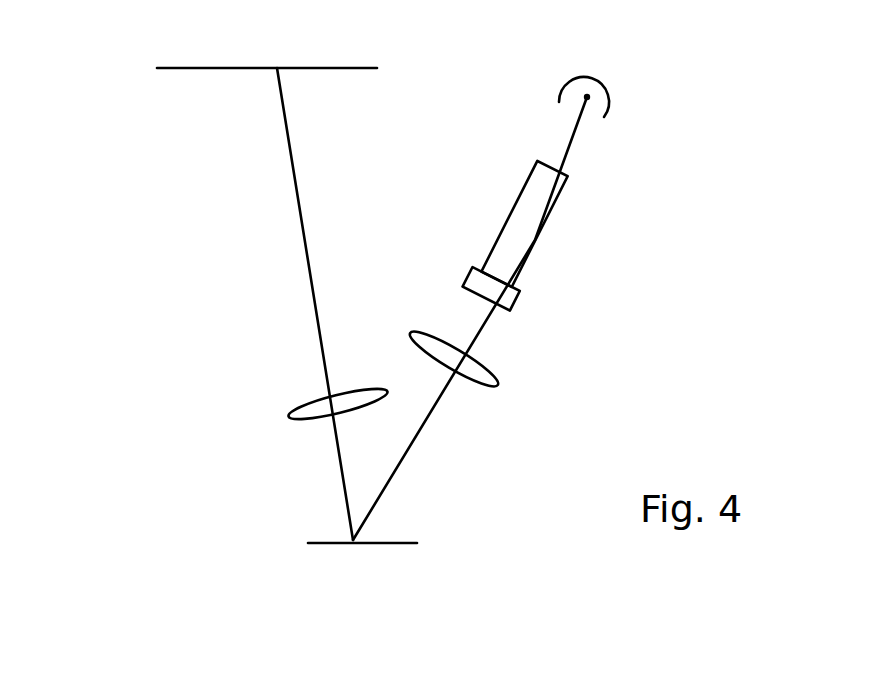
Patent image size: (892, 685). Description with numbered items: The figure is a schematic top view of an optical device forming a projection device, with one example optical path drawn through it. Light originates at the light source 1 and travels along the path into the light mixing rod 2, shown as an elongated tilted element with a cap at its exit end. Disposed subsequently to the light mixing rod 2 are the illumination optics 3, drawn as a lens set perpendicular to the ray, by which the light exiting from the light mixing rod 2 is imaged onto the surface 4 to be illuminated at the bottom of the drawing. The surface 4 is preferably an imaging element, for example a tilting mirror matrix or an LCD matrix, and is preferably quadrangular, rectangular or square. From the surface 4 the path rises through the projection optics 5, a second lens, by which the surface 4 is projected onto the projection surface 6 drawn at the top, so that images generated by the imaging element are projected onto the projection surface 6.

The light source 1 is at (603, 82).
The light mixing rod 2 is at (533, 240).
The illumination optics 3 is at (497, 385).
The surface to be illuminated 4 is at (397, 543).
The projection optics 5 is at (290, 417).
The projection surface 6 is at (180, 68).